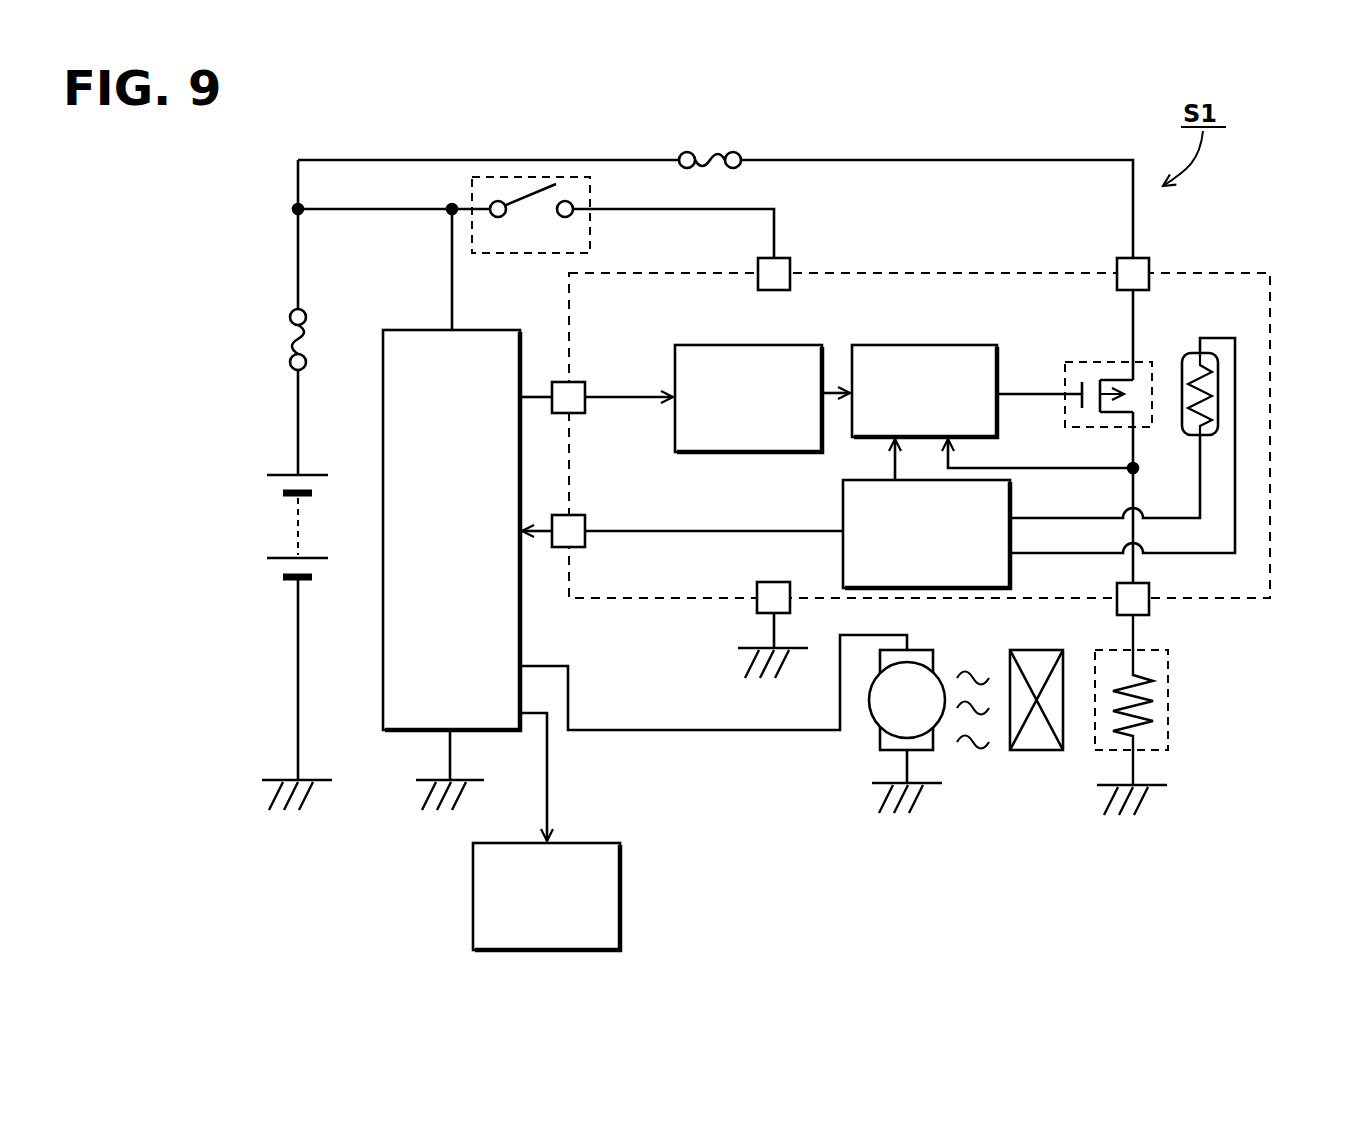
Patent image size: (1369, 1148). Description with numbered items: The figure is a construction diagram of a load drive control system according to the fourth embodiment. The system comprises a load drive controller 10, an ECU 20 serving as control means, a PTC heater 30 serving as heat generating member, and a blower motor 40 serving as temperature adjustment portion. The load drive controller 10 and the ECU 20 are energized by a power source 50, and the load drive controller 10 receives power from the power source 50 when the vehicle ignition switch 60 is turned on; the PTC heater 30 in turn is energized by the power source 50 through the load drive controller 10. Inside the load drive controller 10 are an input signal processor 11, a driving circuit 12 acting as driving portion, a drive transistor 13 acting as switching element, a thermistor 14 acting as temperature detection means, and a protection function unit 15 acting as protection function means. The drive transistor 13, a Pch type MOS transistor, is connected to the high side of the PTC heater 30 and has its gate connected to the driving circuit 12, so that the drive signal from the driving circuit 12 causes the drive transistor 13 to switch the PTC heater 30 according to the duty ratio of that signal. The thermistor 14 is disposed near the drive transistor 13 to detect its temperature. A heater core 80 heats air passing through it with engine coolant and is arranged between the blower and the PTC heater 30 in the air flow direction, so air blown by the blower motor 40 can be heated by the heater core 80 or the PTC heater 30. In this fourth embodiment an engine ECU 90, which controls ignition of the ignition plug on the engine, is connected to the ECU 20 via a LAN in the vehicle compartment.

The load drive controller 10 is at (1270, 561).
The input signal processor 11 is at (795, 345).
The driving circuit 12 is at (917, 345).
The drive transistor 13 is at (1082, 362).
The thermistor 14 is at (1218, 395).
The protection function unit 15 is at (843, 502).
The ECU 20 is at (507, 733).
The PTC heater 30 is at (1168, 738).
The blower motor 40 is at (873, 722).
The power source 50 is at (283, 475).
The vehicle ignition switch 60 is at (548, 182).
The heater core 80 is at (1035, 750).
The engine ECU 90 is at (620, 897).